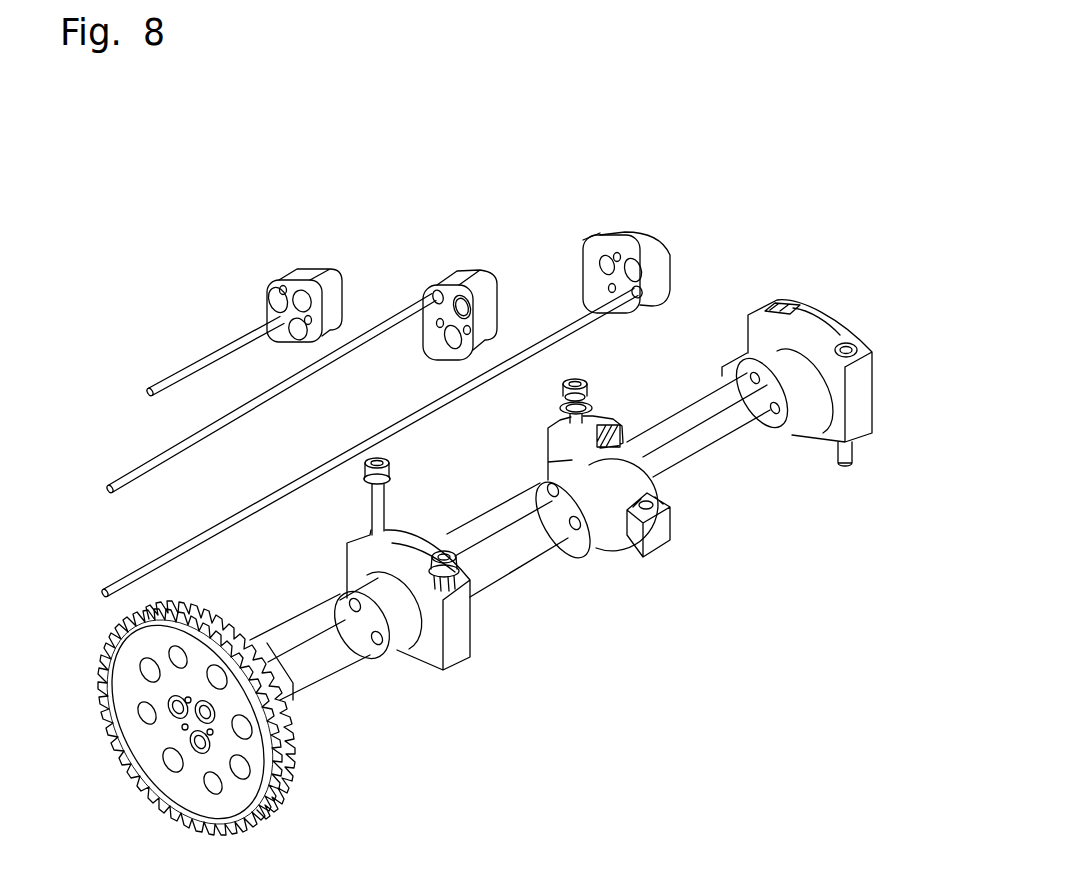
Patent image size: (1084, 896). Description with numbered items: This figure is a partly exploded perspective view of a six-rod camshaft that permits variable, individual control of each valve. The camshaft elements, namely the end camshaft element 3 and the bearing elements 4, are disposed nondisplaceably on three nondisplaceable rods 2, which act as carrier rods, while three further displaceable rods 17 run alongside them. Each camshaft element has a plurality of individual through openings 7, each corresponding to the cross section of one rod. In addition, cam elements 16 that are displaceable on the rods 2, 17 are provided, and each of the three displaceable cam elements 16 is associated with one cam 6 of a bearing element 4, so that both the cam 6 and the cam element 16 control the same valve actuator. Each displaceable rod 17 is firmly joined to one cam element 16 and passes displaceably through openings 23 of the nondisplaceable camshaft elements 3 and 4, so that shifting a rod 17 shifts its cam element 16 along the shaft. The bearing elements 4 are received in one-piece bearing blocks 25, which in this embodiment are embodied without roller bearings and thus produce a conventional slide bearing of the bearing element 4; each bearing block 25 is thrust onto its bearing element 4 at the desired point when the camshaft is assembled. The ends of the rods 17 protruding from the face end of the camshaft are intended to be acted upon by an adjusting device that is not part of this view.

The rods 2 is at (703, 430).
The camshaft element 3 is at (287, 790).
The bearing element 4 is at (810, 373).
The cam 6 is at (749, 352).
The through openings 7 is at (460, 310).
The cam elements 16 is at (448, 274).
The displaceable rods 17 is at (221, 527).
The openings 23 is at (183, 729).
The one-piece bearing block 25 is at (832, 338).